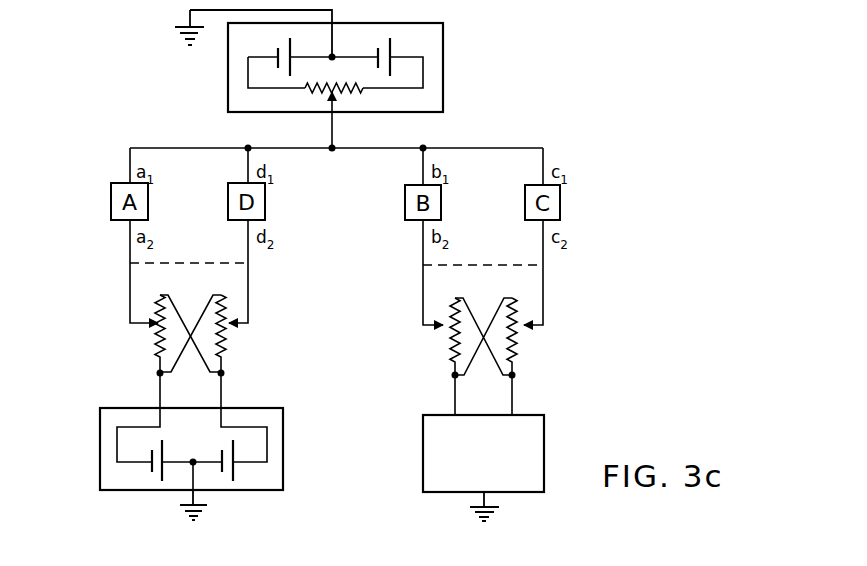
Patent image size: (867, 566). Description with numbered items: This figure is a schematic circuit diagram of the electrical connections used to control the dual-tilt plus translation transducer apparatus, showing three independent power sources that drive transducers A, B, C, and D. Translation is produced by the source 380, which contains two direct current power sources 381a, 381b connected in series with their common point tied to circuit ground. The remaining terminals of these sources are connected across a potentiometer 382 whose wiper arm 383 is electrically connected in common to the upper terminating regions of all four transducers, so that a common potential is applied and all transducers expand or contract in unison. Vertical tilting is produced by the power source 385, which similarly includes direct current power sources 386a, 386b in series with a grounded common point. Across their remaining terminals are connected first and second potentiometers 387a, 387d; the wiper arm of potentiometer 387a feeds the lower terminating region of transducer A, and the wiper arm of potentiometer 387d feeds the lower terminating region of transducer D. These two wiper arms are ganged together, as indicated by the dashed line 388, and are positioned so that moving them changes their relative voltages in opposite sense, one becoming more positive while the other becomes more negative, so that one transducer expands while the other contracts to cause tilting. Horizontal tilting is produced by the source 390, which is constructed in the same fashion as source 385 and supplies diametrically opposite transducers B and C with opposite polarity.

The source 380 is at (443, 40).
The direct current power source 381a is at (423, 75).
The direct current power source 381b is at (278, 60).
The potentiometer 382 is at (350, 95).
The wiper arm 383 is at (330, 131).
The power source 385 is at (268, 408).
The direct current power source 386a is at (235, 467).
The direct current power source 386b is at (150, 462).
The first potentiometer 387a is at (157, 335).
The second potentiometer 387d is at (225, 335).
The dashed line 388 is at (190, 262).
The source 390 is at (535, 415).